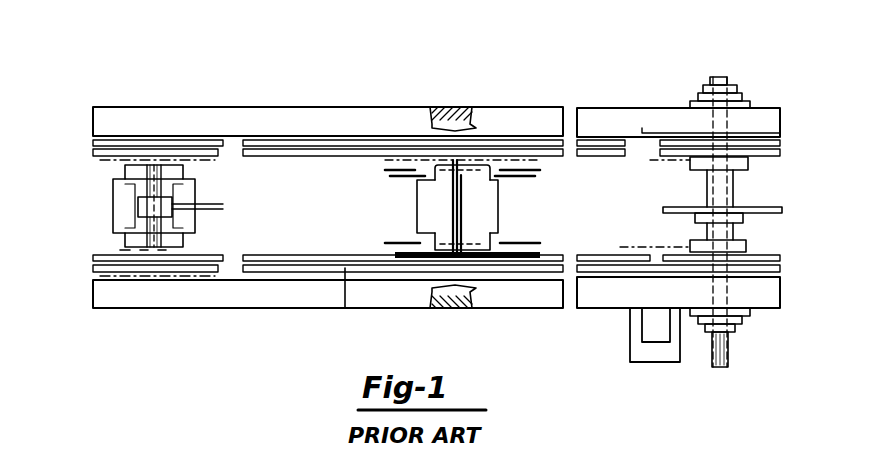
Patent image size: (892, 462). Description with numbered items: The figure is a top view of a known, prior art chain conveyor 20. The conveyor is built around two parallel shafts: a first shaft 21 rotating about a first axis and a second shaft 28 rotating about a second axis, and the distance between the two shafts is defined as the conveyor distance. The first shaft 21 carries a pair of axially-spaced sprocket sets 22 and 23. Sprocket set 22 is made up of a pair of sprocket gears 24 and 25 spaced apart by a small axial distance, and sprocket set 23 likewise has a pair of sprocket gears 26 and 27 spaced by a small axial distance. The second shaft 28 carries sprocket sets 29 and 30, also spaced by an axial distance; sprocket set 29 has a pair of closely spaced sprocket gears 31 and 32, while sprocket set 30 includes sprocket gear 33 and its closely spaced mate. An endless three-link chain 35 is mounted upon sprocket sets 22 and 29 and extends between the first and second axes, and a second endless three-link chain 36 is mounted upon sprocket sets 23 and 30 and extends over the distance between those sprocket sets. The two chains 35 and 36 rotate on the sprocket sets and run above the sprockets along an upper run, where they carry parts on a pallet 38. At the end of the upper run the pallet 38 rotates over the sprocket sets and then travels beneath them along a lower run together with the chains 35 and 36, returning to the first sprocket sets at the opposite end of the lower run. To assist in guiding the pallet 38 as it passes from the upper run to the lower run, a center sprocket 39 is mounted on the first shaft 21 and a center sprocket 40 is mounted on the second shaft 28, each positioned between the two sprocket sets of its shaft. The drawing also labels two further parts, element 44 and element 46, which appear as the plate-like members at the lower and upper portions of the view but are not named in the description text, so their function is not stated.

The chain conveyor 20 is at (318, 84).
The first shaft 21 is at (118, 207).
The sprocket set 22 is at (290, 183).
The sprocket set 23 is at (290, 309).
The sprocket gear 24 is at (216, 146).
The sprocket gear 25 is at (228, 152).
The sprocket gear 26 is at (125, 258).
The sprocket gear 27 is at (150, 273).
The second shaft 28 is at (707, 194).
The sprocket set 29 is at (650, 156).
The sprocket set 30 is at (705, 222).
The sprocket gear 31 is at (783, 142).
The sprocket gear 32 is at (784, 154).
The sprocket gear 33 is at (664, 260).
The endless three-link chain 35 is at (333, 136).
The second endless three-link chain 36 is at (347, 272).
The pallet 38 is at (417, 213).
The center sprocket 39 is at (120, 207).
The center sprocket 40 is at (783, 210).
The lower panel 44 is at (248, 300).
The upper panel 46 is at (145, 107).